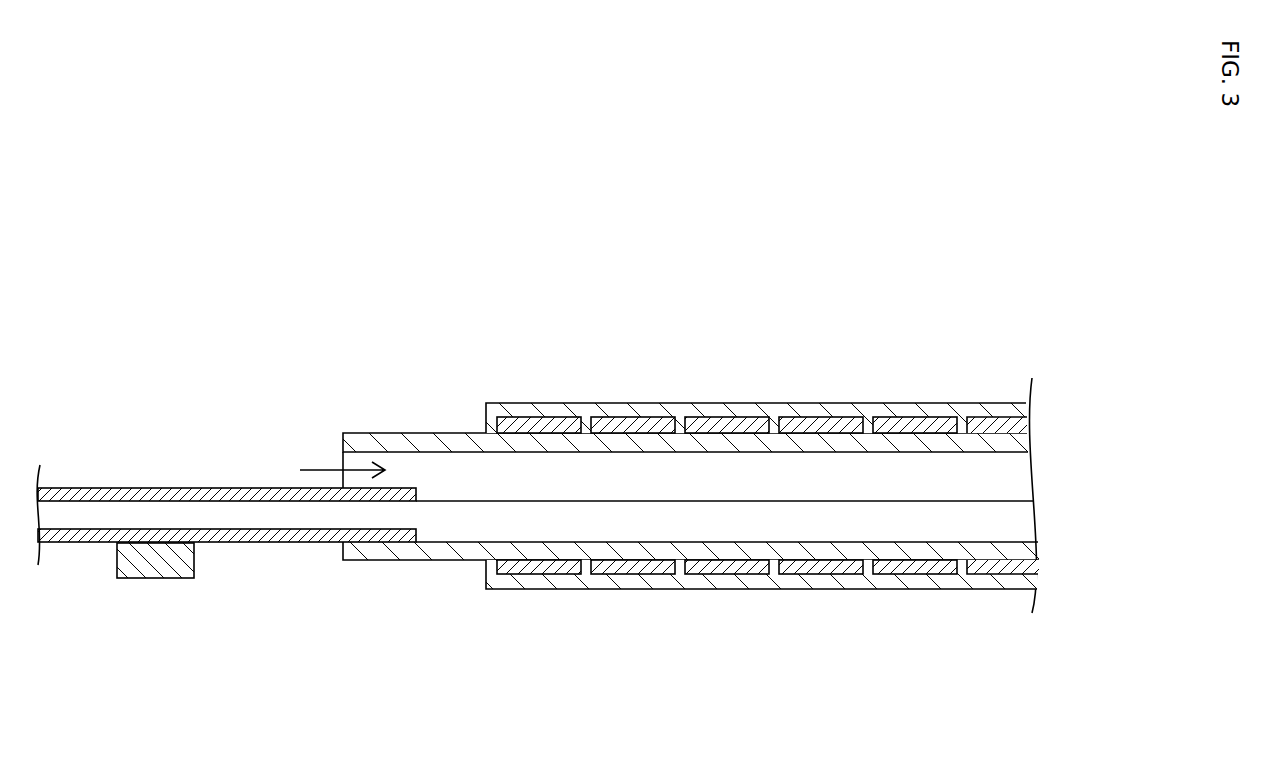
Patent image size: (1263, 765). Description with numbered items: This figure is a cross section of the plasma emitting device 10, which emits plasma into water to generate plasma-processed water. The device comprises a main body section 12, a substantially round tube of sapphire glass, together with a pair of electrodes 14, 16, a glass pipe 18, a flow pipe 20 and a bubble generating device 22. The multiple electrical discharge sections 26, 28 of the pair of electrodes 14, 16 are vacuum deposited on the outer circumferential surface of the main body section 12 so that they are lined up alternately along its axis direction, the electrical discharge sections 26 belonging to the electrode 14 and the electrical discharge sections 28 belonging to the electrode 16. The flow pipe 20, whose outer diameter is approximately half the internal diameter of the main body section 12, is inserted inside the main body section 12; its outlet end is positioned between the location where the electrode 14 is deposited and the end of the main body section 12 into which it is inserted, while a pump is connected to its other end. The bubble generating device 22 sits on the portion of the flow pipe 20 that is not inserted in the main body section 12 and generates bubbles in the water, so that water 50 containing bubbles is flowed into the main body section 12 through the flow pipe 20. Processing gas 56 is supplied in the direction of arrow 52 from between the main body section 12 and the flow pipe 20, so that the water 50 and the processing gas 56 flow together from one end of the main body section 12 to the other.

The plasma emitting device 10 is at (645, 276).
The main body section 12 is at (422, 445).
The electrode 14 is at (762, 382).
The electrode 16 is at (768, 613).
The glass pipe 18 is at (820, 410).
The flow pipe 20 is at (179, 488).
The bubble generating device 22 is at (150, 565).
The electrical discharge section 26 is at (543, 422).
The electrical discharge section 28 is at (623, 565).
The water 50 is at (1013, 518).
The arrow 52 is at (322, 468).
The processing gas 56 is at (1013, 470).